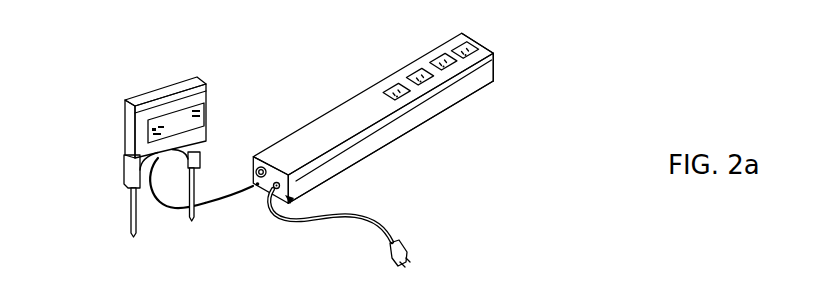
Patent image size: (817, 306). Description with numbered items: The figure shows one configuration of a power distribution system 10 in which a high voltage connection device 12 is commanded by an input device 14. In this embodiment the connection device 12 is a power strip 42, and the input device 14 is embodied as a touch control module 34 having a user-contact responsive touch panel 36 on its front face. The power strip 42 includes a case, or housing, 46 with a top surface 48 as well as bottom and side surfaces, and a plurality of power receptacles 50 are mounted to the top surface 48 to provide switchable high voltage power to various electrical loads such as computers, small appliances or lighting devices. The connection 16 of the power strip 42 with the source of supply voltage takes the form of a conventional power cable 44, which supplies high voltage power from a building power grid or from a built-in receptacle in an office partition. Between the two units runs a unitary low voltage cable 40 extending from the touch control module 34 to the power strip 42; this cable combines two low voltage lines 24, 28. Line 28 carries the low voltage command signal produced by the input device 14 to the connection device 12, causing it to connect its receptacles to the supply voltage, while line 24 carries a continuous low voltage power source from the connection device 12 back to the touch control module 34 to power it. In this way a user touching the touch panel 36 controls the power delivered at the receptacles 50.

The power distribution system 10 is at (562, 134).
The connection device 12 is at (420, 132).
The input device 14 is at (179, 119).
The connection 16 is at (291, 199).
The line 24 is at (205, 210).
The line 28 is at (215, 207).
The touch control module 34 is at (199, 79).
The touch panel 36 is at (208, 115).
The low voltage cable 40 is at (233, 194).
The power strip 42 is at (476, 91).
The power cable 44 is at (385, 226).
The housing 46 is at (486, 48).
The top surface 48 is at (327, 112).
The power receptacles 50 is at (424, 40).